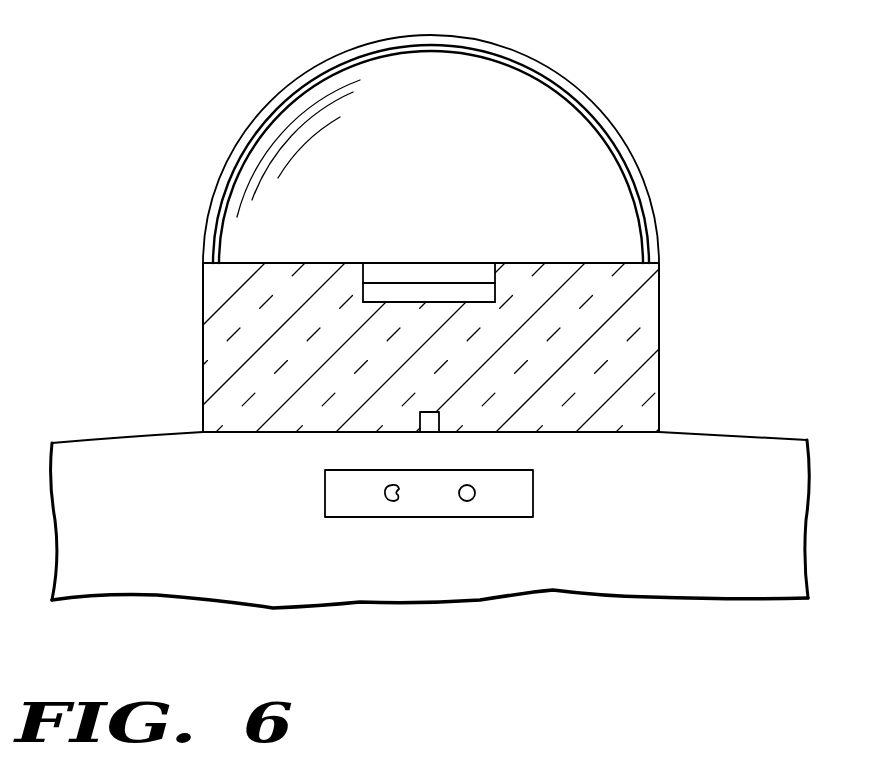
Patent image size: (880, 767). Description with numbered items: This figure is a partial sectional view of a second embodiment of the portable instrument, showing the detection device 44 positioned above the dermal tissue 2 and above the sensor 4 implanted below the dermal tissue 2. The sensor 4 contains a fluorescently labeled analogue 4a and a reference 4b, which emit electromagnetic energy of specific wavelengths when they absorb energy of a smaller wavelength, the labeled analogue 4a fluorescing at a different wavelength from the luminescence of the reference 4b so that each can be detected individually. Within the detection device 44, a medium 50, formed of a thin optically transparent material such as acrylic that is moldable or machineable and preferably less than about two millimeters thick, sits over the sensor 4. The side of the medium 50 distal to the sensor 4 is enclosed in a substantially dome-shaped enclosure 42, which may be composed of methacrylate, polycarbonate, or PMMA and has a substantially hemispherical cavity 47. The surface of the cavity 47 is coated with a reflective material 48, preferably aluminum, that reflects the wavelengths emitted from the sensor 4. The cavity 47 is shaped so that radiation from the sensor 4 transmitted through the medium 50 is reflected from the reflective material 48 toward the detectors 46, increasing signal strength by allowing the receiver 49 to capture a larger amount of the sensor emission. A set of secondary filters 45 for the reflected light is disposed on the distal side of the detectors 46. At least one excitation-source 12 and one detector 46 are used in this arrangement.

The dermal tissue 2 is at (191, 526).
The sensor 4 is at (455, 519).
The fluorescently labeled analogue 4a is at (392, 502).
The reference 4b is at (466, 502).
The excitation-source 12 is at (430, 433).
The enclosure 42 is at (262, 109).
The detection device 44 is at (489, 149).
The secondary filters 45 is at (399, 270).
The detectors 46 is at (467, 291).
The cavity 47 is at (443, 159).
The reflective material 48 is at (612, 164).
The receiver 49 is at (554, 259).
The medium 50 is at (460, 342).